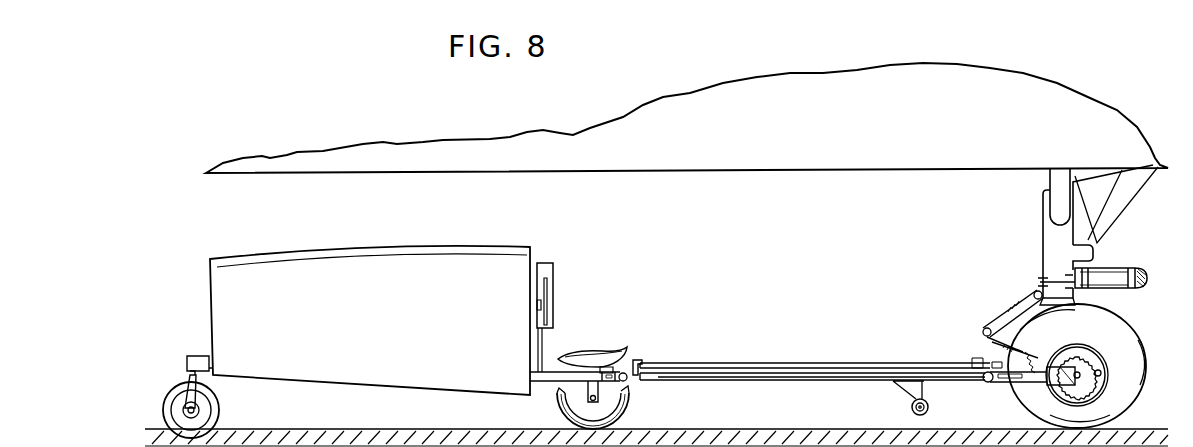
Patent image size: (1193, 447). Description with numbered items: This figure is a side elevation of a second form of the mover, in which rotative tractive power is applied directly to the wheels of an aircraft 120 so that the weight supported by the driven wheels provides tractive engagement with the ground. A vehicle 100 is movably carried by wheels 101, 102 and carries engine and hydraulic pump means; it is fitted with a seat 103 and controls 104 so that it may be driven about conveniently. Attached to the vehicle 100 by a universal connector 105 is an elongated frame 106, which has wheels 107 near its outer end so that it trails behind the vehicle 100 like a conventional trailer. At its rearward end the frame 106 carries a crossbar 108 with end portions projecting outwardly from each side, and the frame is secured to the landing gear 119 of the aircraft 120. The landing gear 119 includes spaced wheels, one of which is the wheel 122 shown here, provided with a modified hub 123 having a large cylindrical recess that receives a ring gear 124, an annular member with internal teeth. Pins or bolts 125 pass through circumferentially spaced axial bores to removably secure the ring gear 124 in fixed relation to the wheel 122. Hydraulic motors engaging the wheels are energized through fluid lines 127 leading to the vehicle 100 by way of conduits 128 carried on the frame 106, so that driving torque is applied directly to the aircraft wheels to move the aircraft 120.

The vehicle 100 is at (497, 258).
The wheel 101 is at (219, 410).
The wheel 102 is at (630, 411).
The seat 103 is at (594, 352).
The controls 104 is at (552, 296).
The universal connector 105 is at (634, 364).
The elongated frame 106 is at (808, 355).
The wheels 107 is at (929, 407).
The crossbar 108 is at (988, 383).
The landing gear 119 is at (1047, 261).
The aircraft 120 is at (787, 164).
The wheel 122 is at (1110, 318).
The modified hub 123 is at (1104, 377).
The ring gear 124 is at (1100, 365).
The pins or bolts 125 is at (1102, 357).
The fluid lines 127 is at (995, 327).
The conduits 128 is at (727, 362).